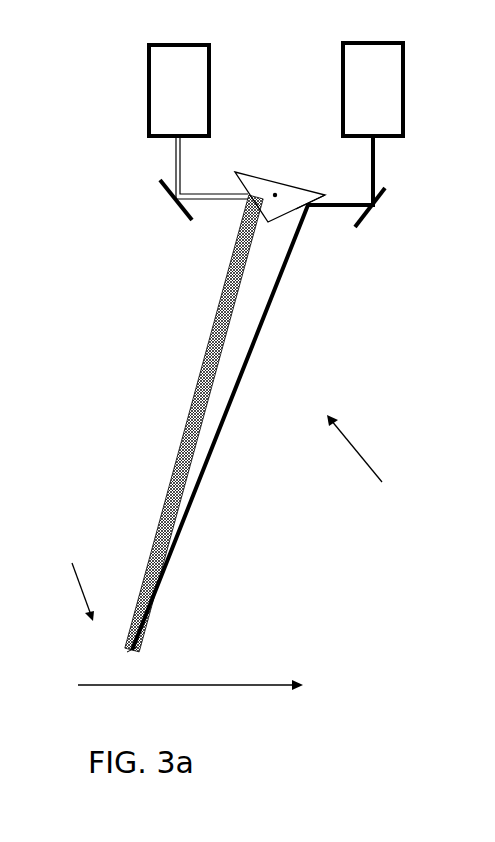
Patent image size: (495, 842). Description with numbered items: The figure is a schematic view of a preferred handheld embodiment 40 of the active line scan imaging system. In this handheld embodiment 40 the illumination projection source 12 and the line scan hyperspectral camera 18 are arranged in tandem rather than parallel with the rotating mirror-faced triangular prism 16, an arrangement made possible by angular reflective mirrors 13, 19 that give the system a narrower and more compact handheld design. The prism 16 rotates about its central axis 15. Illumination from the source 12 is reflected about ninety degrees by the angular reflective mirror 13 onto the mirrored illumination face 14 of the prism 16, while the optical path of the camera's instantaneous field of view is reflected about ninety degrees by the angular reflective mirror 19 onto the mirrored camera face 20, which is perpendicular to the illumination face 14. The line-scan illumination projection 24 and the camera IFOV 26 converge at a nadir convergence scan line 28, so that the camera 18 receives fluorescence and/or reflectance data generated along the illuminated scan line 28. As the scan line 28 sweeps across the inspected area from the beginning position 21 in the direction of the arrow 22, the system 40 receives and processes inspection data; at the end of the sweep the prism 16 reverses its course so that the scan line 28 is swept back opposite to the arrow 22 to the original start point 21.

The illumination projection source 12 is at (185, 92).
The angular reflective mirror 13 is at (176, 211).
The illumination face 14 is at (244, 184).
The central axis 15 is at (274, 192).
The mirror-faced triangular prism 16 is at (279, 193).
The line scan hyperspectral camera 18 is at (381, 92).
The angular reflective mirror 19 is at (363, 218).
The camera face 20 is at (285, 222).
The beginning position 21 is at (73, 578).
The arrow 22 is at (178, 685).
The illumination projection 24 is at (220, 307).
The camera IFOV 26 is at (223, 428).
The nadir convergence scan line 28 is at (143, 642).
The handheld embodiment 40 is at (360, 461).